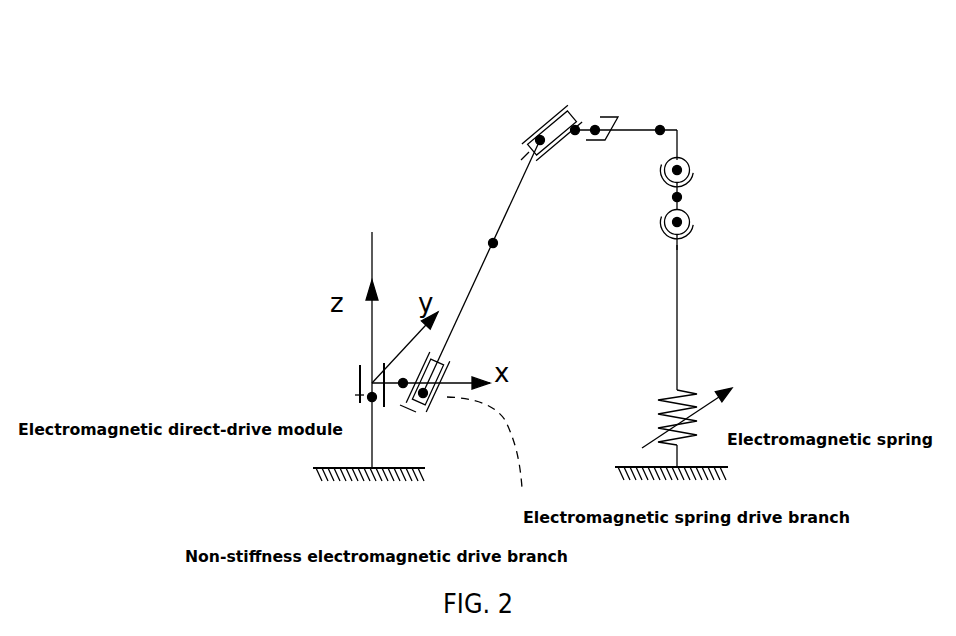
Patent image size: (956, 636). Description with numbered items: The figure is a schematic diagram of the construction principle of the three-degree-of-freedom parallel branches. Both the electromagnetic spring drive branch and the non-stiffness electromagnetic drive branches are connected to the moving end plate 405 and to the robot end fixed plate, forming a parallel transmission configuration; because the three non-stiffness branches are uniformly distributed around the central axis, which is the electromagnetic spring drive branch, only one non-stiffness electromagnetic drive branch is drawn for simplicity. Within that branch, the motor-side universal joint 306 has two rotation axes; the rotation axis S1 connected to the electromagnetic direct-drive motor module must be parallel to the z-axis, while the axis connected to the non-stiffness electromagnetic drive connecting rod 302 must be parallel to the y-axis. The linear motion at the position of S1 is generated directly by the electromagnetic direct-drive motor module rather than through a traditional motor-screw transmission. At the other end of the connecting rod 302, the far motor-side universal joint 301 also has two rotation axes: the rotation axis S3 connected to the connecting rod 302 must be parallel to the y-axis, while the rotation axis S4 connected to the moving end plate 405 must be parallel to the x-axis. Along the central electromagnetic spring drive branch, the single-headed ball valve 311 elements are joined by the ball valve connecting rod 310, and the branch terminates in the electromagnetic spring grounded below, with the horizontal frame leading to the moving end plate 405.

The far motor-side universal joint 301 is at (547, 127).
The non-stiffness electromagnetic drive connecting rod 302 is at (490, 243).
The motor-side universal joint 306 is at (406, 404).
The ball valve connecting rod 310 is at (690, 196).
The single-headed ball valve 311 is at (690, 168).
The moving end plate 405 is at (677, 128).
The rotation axis S1 is at (358, 394).
The rotation axis S3 is at (528, 141).
The rotation axis S4 is at (597, 121).